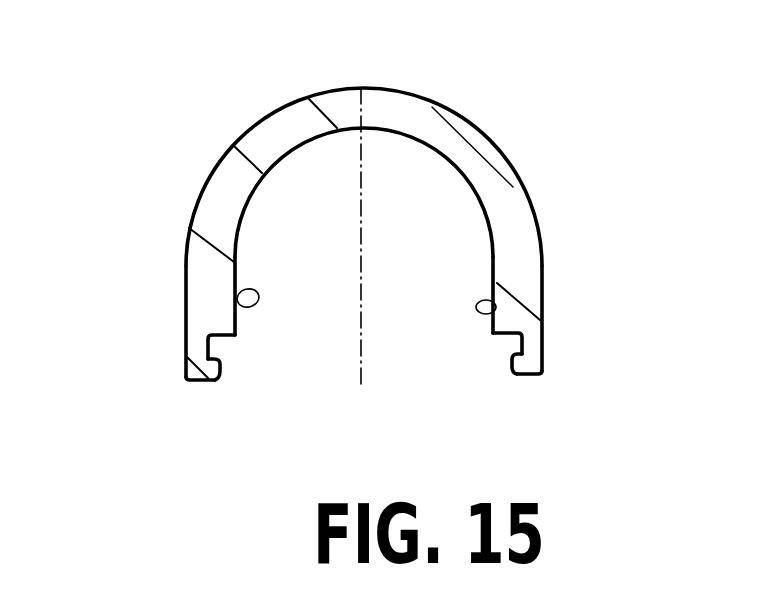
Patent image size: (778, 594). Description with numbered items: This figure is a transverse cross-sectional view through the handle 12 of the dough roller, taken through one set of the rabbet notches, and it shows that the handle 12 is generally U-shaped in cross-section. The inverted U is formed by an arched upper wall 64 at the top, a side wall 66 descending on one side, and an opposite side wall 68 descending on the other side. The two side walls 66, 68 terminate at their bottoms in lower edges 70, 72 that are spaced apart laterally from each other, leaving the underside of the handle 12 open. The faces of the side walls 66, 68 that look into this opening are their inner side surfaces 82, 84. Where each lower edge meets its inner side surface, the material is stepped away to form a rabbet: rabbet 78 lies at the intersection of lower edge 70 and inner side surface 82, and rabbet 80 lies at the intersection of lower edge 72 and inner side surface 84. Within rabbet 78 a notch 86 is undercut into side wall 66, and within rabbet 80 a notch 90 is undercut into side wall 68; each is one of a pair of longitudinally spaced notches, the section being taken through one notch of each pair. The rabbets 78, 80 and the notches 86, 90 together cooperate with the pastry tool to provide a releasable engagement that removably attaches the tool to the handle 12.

The handle 12 is at (490, 143).
The upper wall 64 is at (375, 110).
The side wall 66 is at (213, 283).
The opposite side wall 68 is at (520, 262).
The lower edge 70 is at (185, 383).
The lower edge 72 is at (530, 377).
The rabbet 78 is at (218, 378).
The rabbet 80 is at (517, 372).
The inner side surface 82 is at (238, 292).
The inner side surface 84 is at (494, 303).
The notch 86 is at (515, 343).
The notch 90 is at (210, 349).